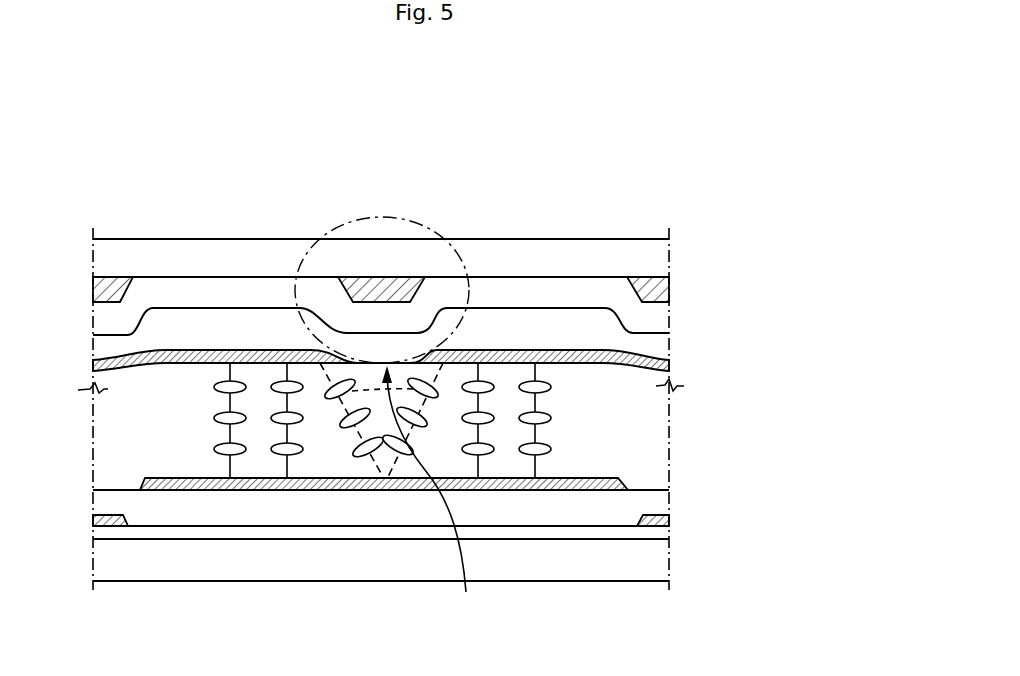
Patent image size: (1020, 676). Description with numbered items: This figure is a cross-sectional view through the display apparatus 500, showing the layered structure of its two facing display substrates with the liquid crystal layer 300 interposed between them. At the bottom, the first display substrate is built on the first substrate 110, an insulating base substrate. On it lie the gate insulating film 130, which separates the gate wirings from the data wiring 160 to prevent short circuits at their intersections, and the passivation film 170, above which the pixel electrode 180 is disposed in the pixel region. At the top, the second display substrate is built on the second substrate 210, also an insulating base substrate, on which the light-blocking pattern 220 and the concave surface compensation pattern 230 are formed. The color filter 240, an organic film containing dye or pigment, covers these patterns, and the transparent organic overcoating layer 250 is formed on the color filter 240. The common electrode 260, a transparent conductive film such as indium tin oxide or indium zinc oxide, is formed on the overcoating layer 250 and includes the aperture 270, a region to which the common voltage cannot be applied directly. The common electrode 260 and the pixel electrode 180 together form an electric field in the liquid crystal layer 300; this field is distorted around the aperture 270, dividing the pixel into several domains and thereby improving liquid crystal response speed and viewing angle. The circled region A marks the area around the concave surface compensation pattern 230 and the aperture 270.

The display apparatus 500 is at (527, 97).
The first substrate 110 is at (664, 565).
The gate insulating film 130 is at (664, 540).
The data wiring 160 is at (664, 520).
The passivation film 170 is at (664, 497).
The pixel electrode 180 is at (620, 478).
The second substrate 210 is at (662, 255).
The light-blocking pattern 220 is at (664, 291).
The concave surface compensation pattern 230 is at (380, 285).
The color filter 240 is at (235, 285).
The overcoating layer 250 is at (662, 343).
The common electrode 260 is at (662, 369).
The aperture 270 is at (433, 500).
The liquid crystal layer 300 is at (683, 409).
The region A is at (418, 226).